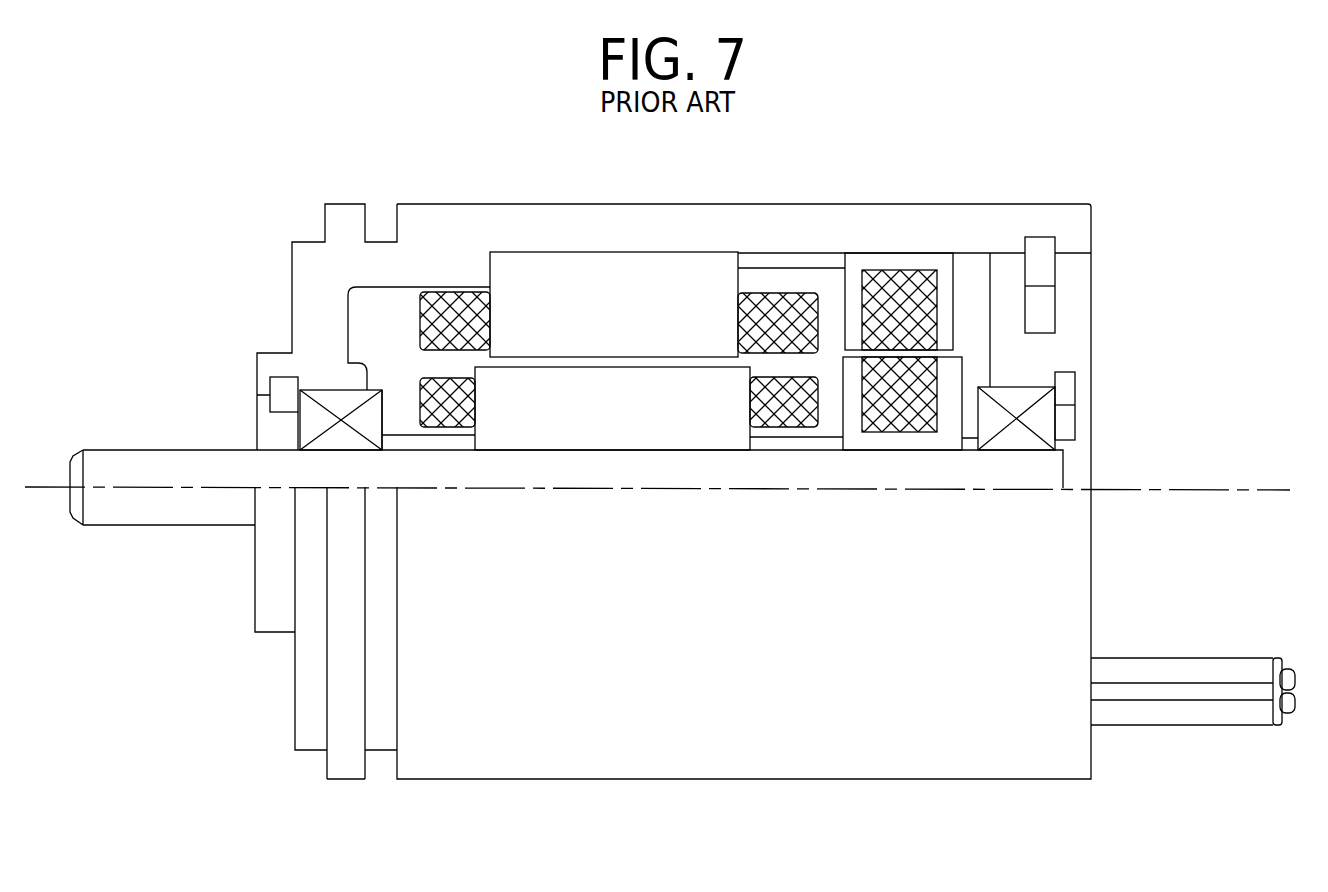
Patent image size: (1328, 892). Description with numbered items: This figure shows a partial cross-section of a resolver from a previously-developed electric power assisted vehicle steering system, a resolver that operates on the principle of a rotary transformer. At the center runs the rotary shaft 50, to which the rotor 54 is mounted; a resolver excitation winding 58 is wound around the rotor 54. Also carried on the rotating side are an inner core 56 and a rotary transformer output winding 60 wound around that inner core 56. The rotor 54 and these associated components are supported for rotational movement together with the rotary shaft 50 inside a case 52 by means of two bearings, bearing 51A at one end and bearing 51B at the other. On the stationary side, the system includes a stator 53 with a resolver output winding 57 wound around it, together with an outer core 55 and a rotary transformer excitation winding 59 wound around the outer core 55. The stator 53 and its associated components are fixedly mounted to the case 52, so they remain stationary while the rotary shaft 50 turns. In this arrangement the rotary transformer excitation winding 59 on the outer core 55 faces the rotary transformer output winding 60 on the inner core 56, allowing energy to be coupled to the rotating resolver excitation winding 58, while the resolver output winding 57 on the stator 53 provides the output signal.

The rotary shaft 50 is at (168, 450).
The bearing 51A is at (332, 390).
The bearing 51B is at (1022, 402).
The case 52 is at (347, 204).
The stator 53 is at (597, 303).
The rotor 54 is at (660, 410).
The outer core 55 is at (947, 263).
The inner core 56 is at (948, 393).
The resolver output winding 57 is at (463, 313).
The resolver excitation winding 58 is at (440, 397).
The rotary transformer excitation winding 59 is at (892, 307).
The rotary transformer output winding 60 is at (883, 392).